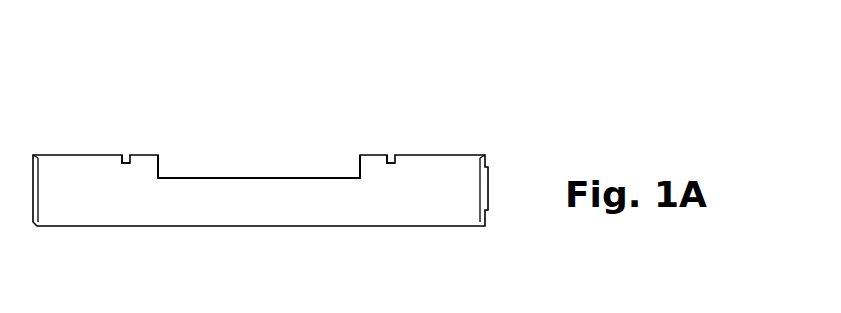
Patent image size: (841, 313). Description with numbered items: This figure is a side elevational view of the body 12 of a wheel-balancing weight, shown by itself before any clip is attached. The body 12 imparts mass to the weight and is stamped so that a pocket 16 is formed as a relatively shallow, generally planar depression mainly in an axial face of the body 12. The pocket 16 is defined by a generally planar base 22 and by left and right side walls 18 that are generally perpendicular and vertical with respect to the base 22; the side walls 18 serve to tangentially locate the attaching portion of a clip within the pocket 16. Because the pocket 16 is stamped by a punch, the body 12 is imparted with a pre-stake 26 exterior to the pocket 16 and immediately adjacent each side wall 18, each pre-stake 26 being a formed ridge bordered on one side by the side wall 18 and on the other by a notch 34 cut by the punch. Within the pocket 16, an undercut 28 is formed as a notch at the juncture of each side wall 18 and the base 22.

The body 12 is at (443, 207).
The pocket 16 is at (264, 138).
The side wall 18 is at (159, 157).
The base 22 is at (247, 172).
The pre-stake 26 is at (140, 152).
The undercut 28 is at (163, 176).
The notch 34 is at (131, 158).